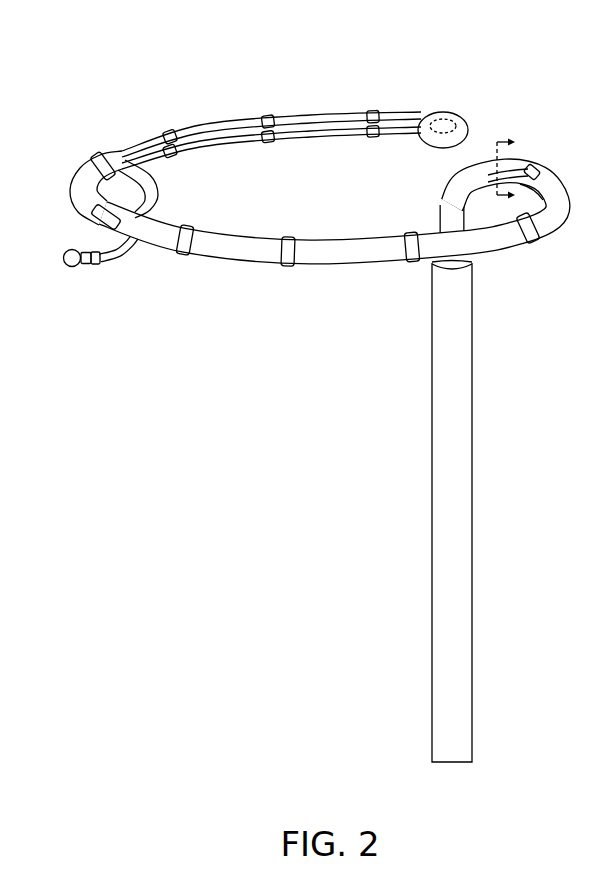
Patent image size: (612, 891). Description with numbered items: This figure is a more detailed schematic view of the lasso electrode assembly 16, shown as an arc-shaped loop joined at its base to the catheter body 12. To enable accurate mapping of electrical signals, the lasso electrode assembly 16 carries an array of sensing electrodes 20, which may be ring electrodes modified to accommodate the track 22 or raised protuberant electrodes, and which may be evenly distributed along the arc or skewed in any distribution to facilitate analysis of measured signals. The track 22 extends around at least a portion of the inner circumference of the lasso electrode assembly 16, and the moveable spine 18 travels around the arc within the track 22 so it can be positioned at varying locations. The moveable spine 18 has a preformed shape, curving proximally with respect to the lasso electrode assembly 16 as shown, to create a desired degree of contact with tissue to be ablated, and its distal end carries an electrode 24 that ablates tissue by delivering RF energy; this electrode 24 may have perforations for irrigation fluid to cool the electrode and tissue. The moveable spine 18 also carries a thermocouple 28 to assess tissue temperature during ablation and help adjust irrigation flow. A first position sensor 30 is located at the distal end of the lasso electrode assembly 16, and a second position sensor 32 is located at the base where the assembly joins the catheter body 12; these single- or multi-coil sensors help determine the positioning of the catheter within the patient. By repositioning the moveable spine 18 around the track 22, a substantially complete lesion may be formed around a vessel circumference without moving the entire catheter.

The catheter body 12 is at (473, 440).
The lasso electrode assembly 16 is at (197, 60).
The moveable spine 18 is at (145, 208).
The sensing electrodes 20 is at (454, 112).
The track 22 is at (302, 133).
The electrode 24 is at (66, 264).
The thermocouple 28 is at (97, 267).
The first position sensor 30 is at (445, 133).
The second position sensor 32 is at (475, 264).